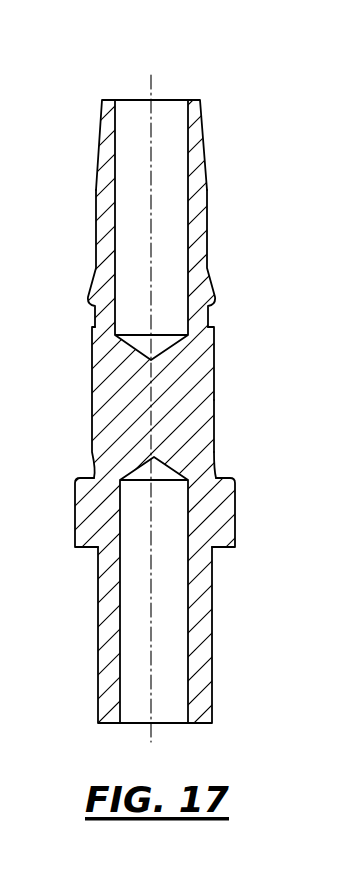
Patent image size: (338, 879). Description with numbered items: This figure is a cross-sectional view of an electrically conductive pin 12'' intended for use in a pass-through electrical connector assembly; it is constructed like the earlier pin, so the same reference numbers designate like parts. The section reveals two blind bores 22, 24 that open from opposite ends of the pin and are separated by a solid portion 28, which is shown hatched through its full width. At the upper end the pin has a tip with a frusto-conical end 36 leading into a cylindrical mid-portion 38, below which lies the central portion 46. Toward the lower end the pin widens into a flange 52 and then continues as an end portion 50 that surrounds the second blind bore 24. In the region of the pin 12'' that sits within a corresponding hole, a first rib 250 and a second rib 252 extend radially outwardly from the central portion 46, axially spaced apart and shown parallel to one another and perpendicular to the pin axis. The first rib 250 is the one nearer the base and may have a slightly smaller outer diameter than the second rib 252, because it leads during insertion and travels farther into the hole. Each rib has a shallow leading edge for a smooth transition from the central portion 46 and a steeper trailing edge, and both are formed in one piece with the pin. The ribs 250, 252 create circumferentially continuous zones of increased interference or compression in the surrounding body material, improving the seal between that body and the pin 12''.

The blind bore 22 is at (187, 150).
The frusto-conical end 36 is at (207, 130).
The electrically conductive pin 12'' is at (239, 408).
The cylindrical mid-portion 38 is at (97, 190).
The first rib 250 is at (216, 370).
The central portion 46 is at (215, 407).
The second rib 252 is at (217, 448).
The solid portion 28 is at (107, 407).
The flange 52 is at (90, 512).
The end portion 50 is at (100, 650).
The blind bore 24 is at (122, 695).